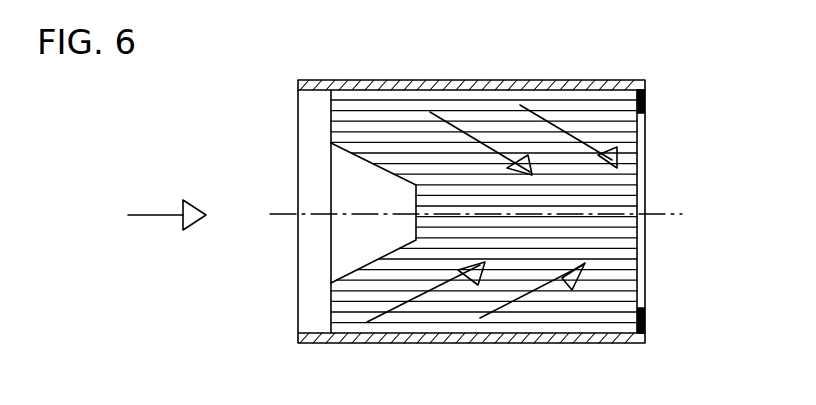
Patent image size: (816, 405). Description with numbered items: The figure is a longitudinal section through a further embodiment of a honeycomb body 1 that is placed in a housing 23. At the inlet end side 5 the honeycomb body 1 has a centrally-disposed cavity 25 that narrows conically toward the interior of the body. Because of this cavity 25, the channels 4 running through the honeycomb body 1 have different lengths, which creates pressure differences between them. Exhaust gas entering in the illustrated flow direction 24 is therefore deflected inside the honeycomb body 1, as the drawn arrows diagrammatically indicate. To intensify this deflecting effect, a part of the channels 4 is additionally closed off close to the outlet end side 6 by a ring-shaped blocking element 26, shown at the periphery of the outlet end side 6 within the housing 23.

The honeycomb body 1 is at (625, 195).
The channels 4 is at (552, 307).
The inlet end side 5 is at (326, 308).
The outlet end side 6 is at (640, 267).
The housing 23 is at (585, 333).
The flow direction 24 is at (148, 217).
The cavity 25 is at (357, 187).
The ring-shaped blocking element 26 is at (645, 102).